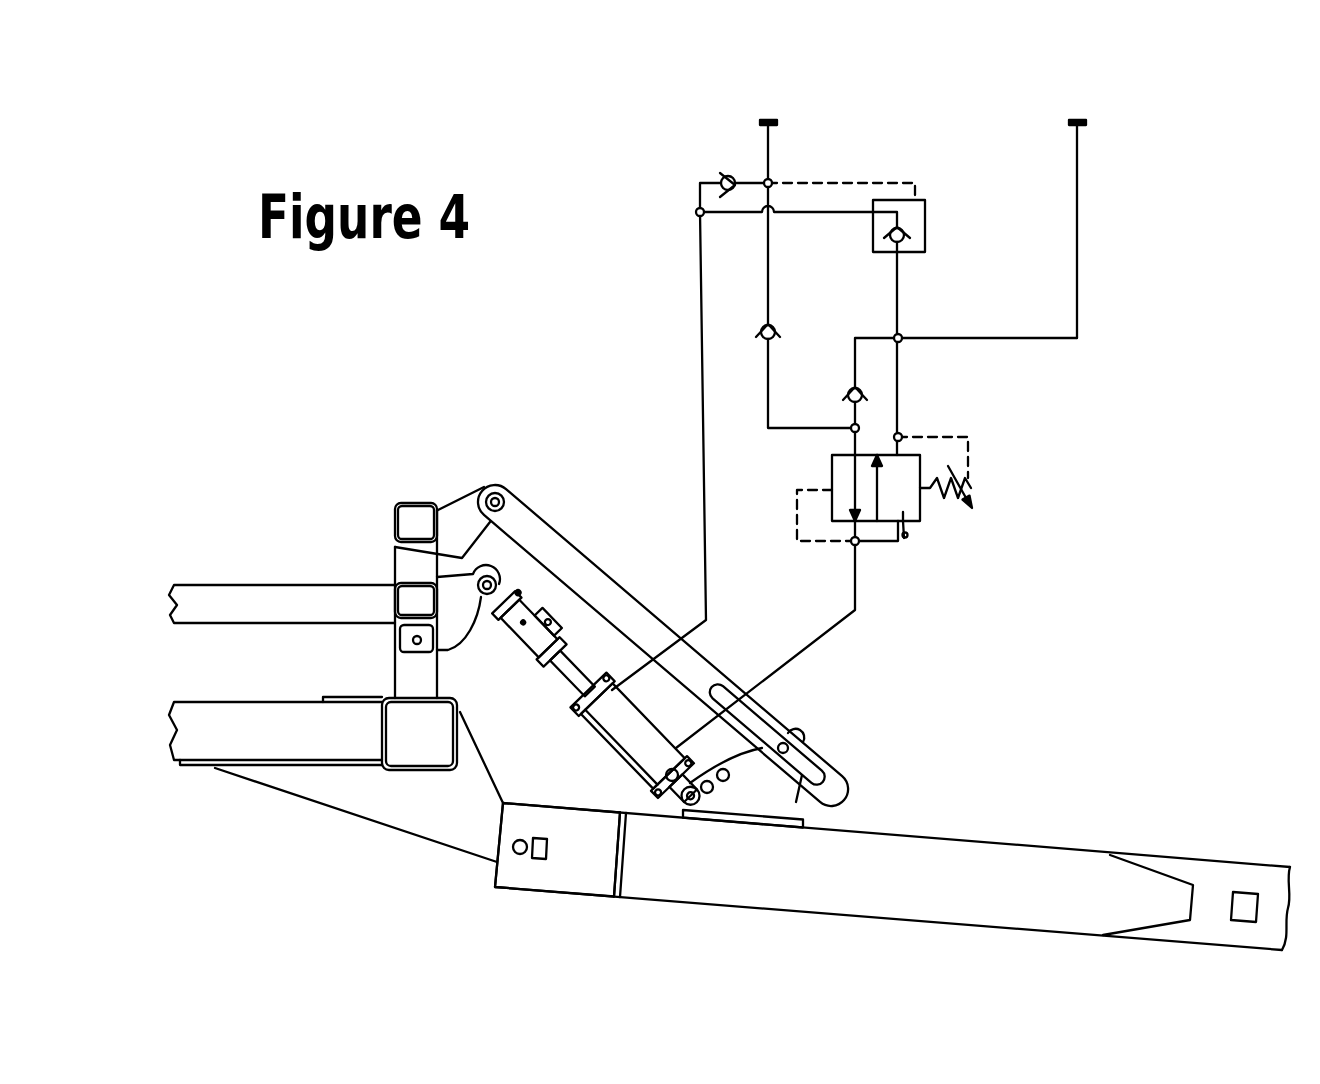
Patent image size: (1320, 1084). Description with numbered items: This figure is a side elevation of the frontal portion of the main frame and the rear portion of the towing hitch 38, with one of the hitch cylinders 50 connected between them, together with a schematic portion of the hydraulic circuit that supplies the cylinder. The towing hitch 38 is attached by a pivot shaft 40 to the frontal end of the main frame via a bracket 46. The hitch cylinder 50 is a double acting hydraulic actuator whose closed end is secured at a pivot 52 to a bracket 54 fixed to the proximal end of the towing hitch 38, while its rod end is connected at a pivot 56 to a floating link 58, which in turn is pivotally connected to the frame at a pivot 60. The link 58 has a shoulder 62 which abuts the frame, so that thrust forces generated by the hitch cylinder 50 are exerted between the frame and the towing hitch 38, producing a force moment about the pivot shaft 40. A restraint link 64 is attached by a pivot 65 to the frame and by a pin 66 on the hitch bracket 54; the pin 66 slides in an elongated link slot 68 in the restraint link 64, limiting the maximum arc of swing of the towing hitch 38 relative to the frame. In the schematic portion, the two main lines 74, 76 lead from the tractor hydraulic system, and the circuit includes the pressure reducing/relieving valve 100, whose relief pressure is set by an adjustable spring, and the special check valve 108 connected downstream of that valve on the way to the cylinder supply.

The towing hitch 38 is at (1012, 846).
The pivot shaft 40 is at (513, 857).
The bracket 46 is at (323, 792).
The hitch cylinder 50 is at (563, 715).
The pivot 52 is at (683, 807).
The bracket 54 is at (790, 800).
The pivot 56 is at (500, 583).
The floating link 58 is at (478, 635).
The pivot 60 is at (413, 640).
The shoulder 62 is at (452, 590).
The restraint link 64 is at (610, 608).
The pivot 65 is at (507, 492).
The pin 66 is at (786, 745).
The elongated link slot 68 is at (850, 793).
The main line 74 is at (1078, 160).
The main line 76 is at (768, 147).
The pressure reducing/relieving valve 100 is at (931, 549).
The special check valve 108 is at (1018, 318).